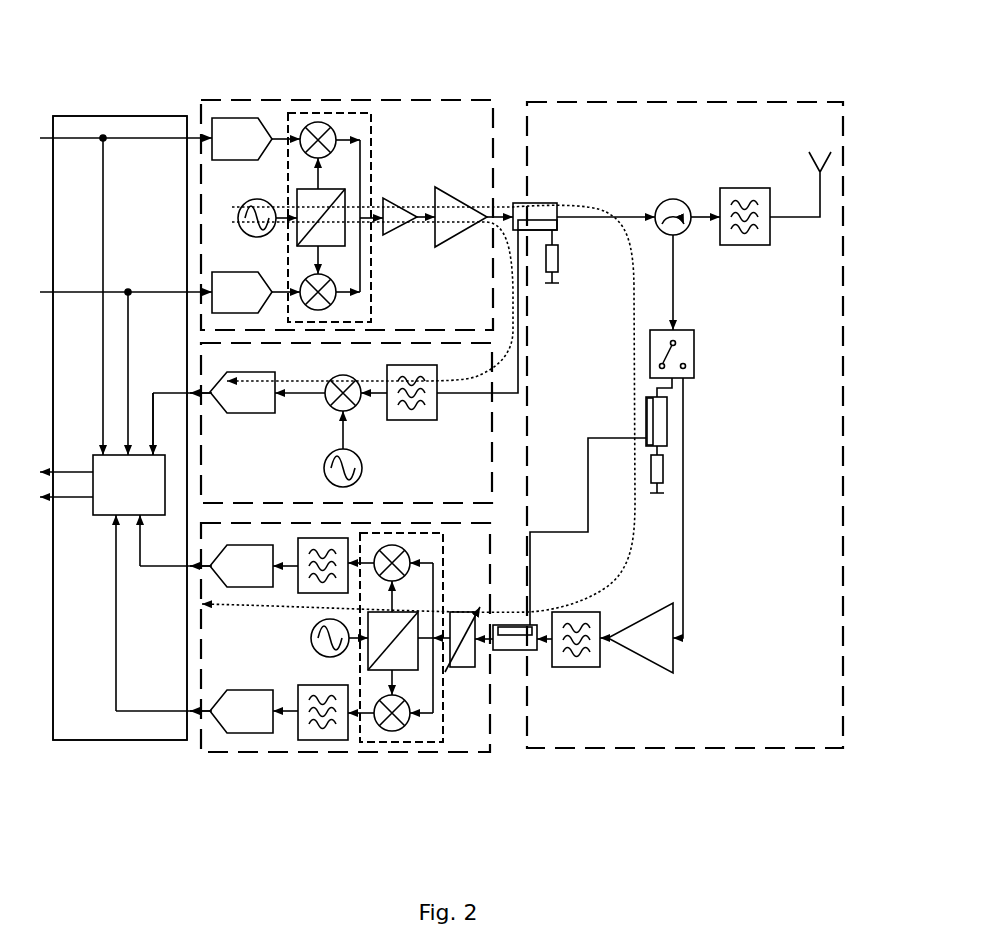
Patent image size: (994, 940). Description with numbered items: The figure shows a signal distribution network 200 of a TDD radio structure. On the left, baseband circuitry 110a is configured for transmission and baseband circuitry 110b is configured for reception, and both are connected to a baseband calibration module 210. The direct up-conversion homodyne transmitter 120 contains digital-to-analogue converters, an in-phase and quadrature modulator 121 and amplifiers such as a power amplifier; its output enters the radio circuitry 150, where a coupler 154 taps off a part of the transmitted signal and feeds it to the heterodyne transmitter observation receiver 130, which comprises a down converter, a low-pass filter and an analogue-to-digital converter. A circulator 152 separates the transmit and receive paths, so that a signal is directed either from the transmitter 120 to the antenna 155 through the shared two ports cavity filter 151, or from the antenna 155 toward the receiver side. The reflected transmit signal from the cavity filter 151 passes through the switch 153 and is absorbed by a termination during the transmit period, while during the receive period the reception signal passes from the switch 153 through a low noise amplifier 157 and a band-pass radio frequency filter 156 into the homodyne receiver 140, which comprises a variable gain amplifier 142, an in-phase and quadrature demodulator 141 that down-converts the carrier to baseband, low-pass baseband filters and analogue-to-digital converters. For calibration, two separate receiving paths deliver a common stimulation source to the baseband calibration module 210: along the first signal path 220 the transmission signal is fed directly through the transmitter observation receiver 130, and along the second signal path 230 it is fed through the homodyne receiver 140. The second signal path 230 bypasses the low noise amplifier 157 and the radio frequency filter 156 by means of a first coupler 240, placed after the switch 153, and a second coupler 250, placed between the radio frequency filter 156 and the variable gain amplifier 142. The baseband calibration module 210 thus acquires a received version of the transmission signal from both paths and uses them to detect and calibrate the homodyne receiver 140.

The signal distribution network 200 is at (694, 45).
The baseband circuitry 110a is at (97, 742).
The baseband circuitry 110b is at (120, 482).
The direct up-conversion homodyne transmitter 120 is at (357, 180).
The in-phase and quadrature modulator 121 is at (372, 150).
The transmitter observation receiver 130 is at (462, 503).
The homodyne receiver 140 is at (345, 685).
The in-phase and quadrature demodulator 141 is at (388, 747).
The variable gain amplifier 142 is at (479, 607).
The radio circuitry 150 is at (678, 472).
The two ports cavity filter 151 is at (757, 245).
The circulator 152 is at (668, 198).
The switch 153 is at (694, 337).
The coupler 154 is at (540, 203).
The antenna 155 is at (810, 197).
The band-pass radio frequency filter 156 is at (573, 620).
The low noise amplifier 157 is at (665, 655).
The baseband calibration module 210 is at (113, 496).
The first signal path 220 is at (500, 360).
The second signal path 230 is at (643, 522).
The first coupler 240 is at (667, 415).
The second coupler 250 is at (508, 650).